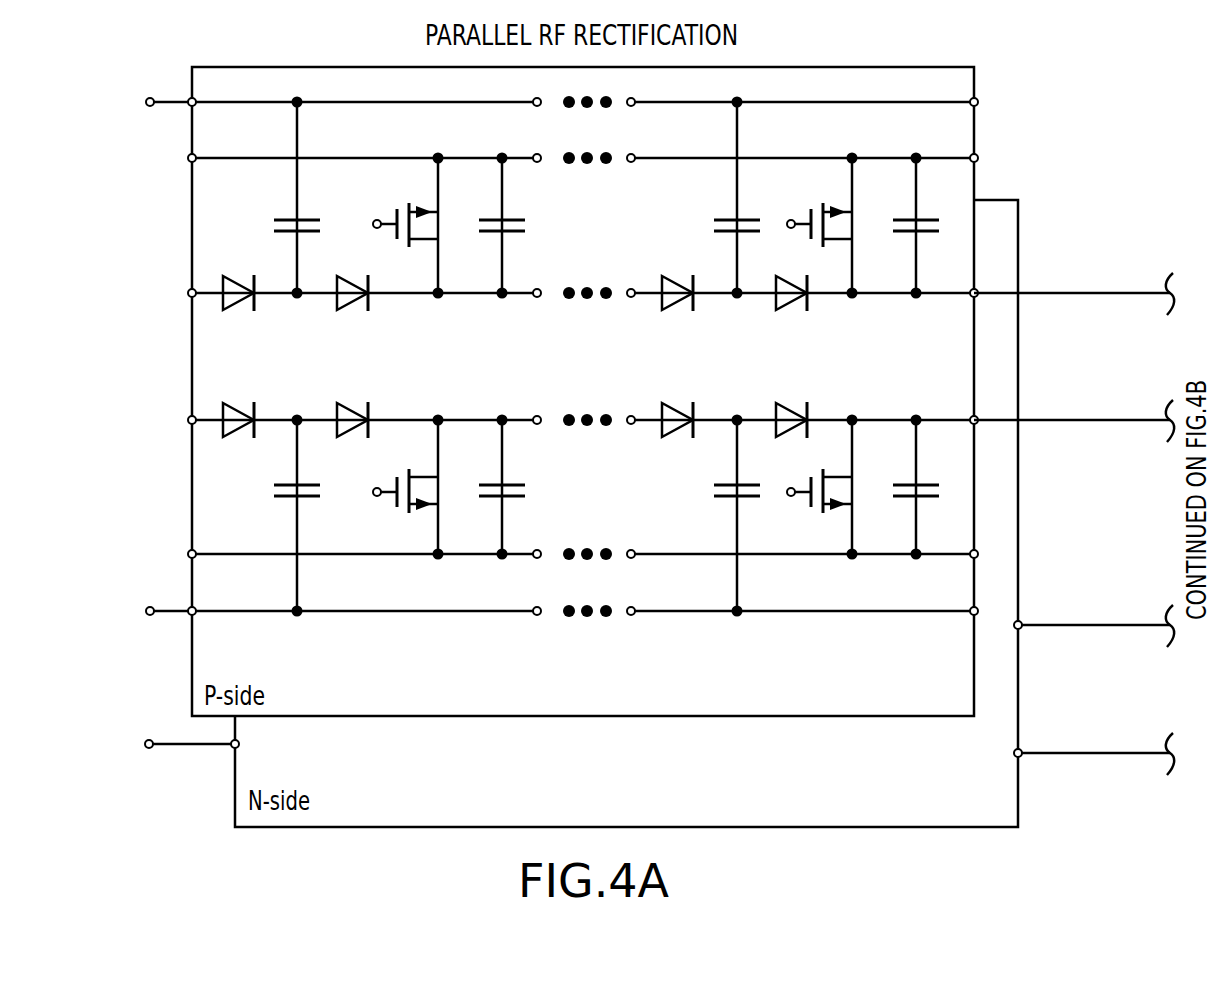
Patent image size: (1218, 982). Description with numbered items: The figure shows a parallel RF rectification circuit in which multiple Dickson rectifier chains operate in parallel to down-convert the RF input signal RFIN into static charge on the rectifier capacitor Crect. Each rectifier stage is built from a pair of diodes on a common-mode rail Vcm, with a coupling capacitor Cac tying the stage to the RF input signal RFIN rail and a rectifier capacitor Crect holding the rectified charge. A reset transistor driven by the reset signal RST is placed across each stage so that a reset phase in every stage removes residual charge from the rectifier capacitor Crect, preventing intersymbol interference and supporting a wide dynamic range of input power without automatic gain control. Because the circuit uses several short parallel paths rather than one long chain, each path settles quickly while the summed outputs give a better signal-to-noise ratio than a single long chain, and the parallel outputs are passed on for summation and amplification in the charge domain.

The RF input signal RFIN is at (532, 358).
The common-mode voltage terminal Vcm is at (557, 359).
The AC coupling capacitor Cac is at (501, 360).
The rectifier capacitor Crect is at (692, 360).
The reset signal RST is at (597, 356).